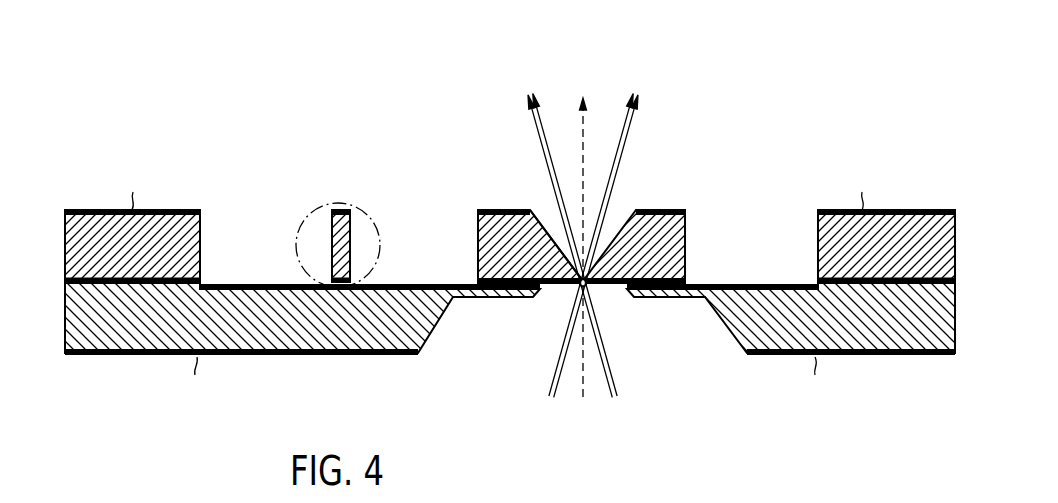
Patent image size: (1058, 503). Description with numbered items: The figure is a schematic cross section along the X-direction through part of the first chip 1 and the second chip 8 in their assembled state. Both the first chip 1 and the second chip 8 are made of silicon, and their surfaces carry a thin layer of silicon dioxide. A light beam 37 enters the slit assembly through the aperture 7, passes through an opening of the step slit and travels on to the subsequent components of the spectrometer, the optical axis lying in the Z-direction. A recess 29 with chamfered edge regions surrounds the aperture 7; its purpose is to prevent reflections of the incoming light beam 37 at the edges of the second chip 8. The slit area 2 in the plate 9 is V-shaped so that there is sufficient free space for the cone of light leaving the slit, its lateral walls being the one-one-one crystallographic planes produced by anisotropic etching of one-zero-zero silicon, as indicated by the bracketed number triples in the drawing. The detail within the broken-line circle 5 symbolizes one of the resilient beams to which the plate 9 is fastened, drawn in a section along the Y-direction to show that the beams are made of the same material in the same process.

The first chip 1 is at (87, 250).
The slit area 2 is at (534, 183).
The resilient beam detail 5 is at (350, 233).
The aperture 7 is at (606, 296).
The second chip 8 is at (90, 318).
The plate 9 is at (673, 232).
The recess 29 is at (533, 319).
The light beam 37 is at (606, 98).